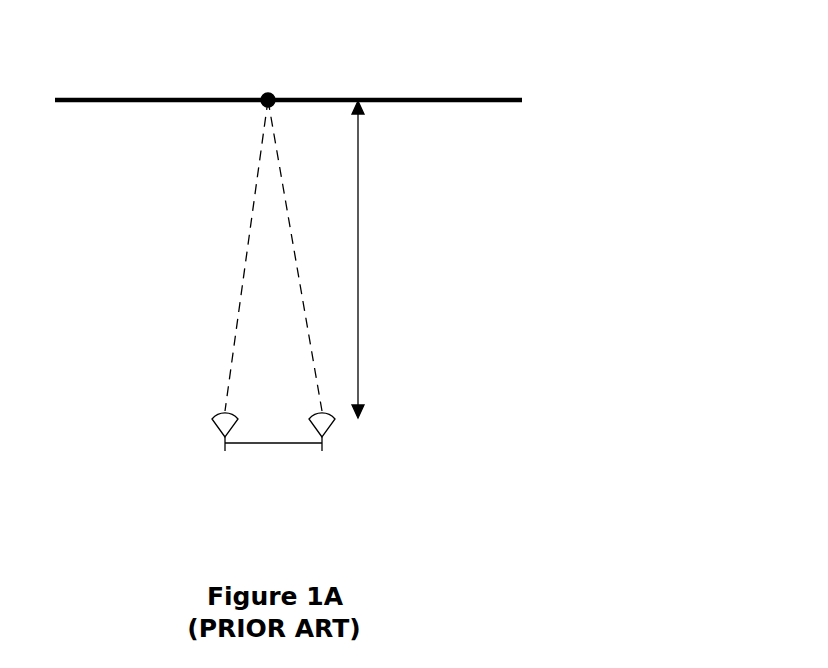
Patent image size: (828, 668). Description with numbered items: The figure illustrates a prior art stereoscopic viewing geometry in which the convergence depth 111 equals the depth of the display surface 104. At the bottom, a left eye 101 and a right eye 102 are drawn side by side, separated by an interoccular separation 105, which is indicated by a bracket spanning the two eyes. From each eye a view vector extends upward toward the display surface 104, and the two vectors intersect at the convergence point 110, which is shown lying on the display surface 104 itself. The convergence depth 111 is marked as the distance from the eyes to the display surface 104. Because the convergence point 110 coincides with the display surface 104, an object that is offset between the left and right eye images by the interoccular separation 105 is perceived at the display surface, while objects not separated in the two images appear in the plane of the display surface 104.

The left eye 101 is at (215, 428).
The right eye 102 is at (332, 425).
The display surface 104 is at (465, 98).
The interoccular separation 105 is at (253, 443).
The convergence point 110 is at (272, 93).
The convergence depth 111 is at (358, 268).